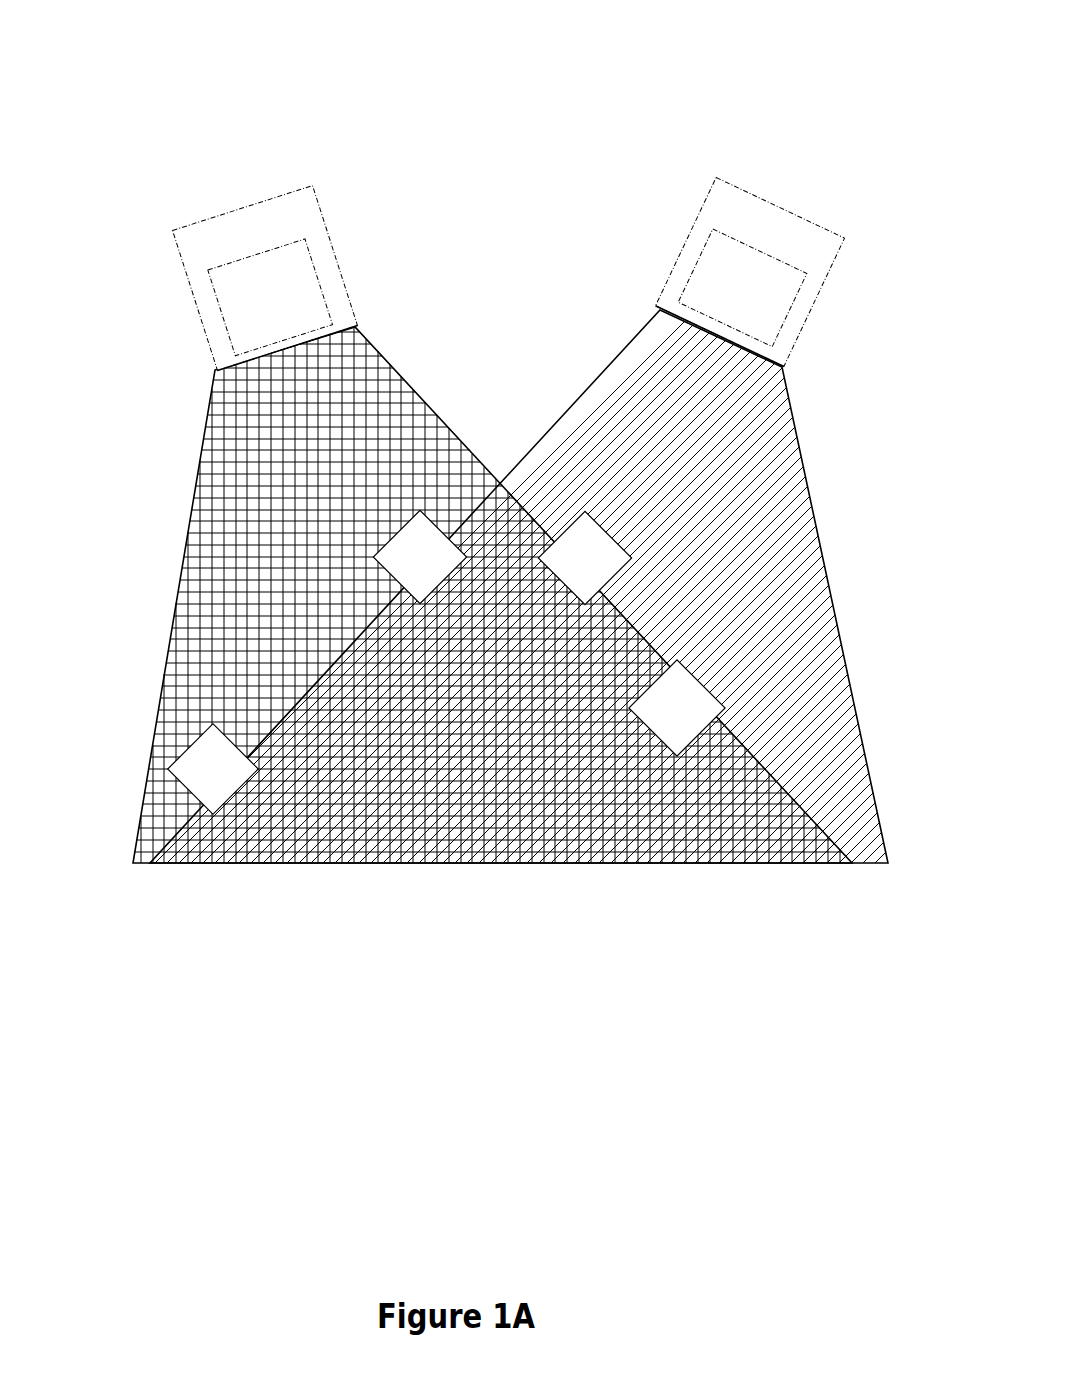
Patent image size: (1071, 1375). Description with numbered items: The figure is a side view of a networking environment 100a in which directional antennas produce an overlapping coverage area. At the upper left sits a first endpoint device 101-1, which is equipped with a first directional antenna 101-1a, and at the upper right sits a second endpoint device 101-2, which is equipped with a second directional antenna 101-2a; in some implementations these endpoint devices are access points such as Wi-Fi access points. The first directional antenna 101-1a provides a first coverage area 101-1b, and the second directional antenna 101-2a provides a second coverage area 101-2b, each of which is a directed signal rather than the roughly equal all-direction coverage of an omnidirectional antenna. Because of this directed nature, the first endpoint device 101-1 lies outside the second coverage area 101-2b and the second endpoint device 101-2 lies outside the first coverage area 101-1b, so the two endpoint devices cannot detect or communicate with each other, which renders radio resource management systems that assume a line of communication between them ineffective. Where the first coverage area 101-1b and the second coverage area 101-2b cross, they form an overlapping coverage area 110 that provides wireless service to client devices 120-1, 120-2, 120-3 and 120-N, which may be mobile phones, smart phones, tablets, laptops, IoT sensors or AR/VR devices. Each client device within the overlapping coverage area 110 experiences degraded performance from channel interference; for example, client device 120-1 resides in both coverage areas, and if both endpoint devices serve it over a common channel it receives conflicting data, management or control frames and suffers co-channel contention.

The networking environment 100a is at (486, 525).
The first endpoint device 101-1 is at (265, 278).
The first directional antenna 101-1a is at (270, 297).
The first coverage area 101-1b is at (228, 462).
The second endpoint device 101-2 is at (749, 271).
The second directional antenna 101-2a is at (742, 288).
The second coverage area 101-2b is at (787, 555).
The overlapping coverage area 110 is at (602, 828).
The client device 120-1 is at (419, 556).
The client device 120-2 is at (584, 557).
The client device 120-3 is at (677, 708).
The client device 120-N is at (213, 769).